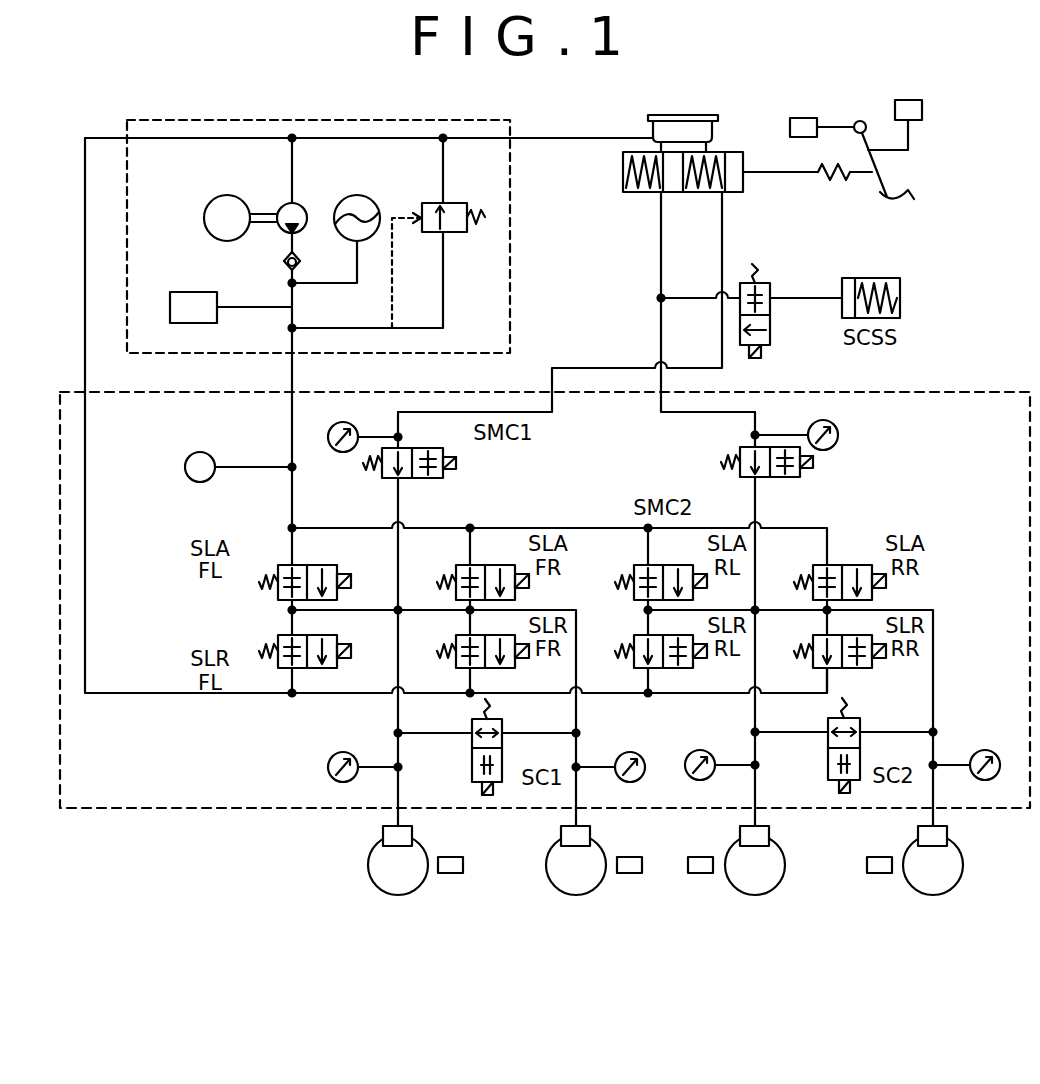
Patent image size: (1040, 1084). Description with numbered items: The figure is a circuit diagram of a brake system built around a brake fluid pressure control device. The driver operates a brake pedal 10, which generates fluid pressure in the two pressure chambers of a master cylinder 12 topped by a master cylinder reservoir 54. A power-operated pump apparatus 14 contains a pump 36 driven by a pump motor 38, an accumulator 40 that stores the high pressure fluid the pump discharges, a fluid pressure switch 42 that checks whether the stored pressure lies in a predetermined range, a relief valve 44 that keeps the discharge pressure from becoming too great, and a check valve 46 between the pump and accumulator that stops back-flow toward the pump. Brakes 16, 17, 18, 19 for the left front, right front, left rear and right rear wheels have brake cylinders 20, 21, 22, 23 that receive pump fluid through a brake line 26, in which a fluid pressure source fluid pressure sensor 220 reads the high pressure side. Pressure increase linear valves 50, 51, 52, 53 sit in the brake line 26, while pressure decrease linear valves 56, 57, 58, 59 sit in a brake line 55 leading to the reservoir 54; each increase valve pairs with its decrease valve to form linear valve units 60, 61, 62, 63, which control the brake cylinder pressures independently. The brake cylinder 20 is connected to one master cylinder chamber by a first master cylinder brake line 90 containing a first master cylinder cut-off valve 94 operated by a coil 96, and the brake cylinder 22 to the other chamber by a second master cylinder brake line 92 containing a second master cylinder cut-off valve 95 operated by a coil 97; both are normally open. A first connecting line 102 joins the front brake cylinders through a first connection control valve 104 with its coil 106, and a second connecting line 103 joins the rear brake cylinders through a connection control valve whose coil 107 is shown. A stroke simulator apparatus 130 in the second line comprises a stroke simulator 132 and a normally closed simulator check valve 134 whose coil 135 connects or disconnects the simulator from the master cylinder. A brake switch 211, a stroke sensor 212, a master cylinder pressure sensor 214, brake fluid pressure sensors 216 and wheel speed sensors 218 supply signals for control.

The brake pedal 10 is at (870, 182).
The master cylinder 12 is at (608, 186).
The pump apparatus 14 is at (349, 120).
The brake 16 is at (345, 861).
The brake 17 is at (541, 861).
The brake 18 is at (799, 858).
The brake 19 is at (977, 858).
The brake cylinder 20 is at (383, 833).
The brake cylinder 21 is at (561, 833).
The brake cylinder 22 is at (769, 833).
The brake cylinder 23 is at (947, 833).
The brake line 26 is at (294, 373).
The pump 36 is at (303, 228).
The pump motor 38 is at (205, 207).
The accumulator 40 is at (347, 196).
The fluid pressure switch 42 is at (178, 292).
The relief valve 44 is at (458, 232).
The check valve 46 is at (284, 262).
The pressure increase linear valve 50 is at (283, 566).
The pressure increase linear valve 51 is at (483, 565).
The pressure increase linear valve 52 is at (661, 565).
The pressure increase linear valve 53 is at (840, 565).
The master cylinder reservoir 54 is at (650, 132).
The brake line 55 is at (113, 693).
The pressure decrease linear valve 56 is at (283, 666).
The pressure decrease linear valve 57 is at (498, 669).
The pressure decrease linear valve 58 is at (678, 669).
The pressure decrease linear valve 59 is at (855, 669).
The linear valve unit 60 is at (279, 618).
The linear valve unit 61 is at (455, 618).
The linear valve unit 62 is at (633, 618).
The linear valve unit 63 is at (813, 618).
The first master cylinder brake line 90 is at (552, 413).
The second master cylinder brake line 92 is at (673, 413).
The first master cylinder cut-off valve 94 is at (417, 448).
The second master cylinder cut-off valve 95 is at (750, 479).
The coil 96 is at (458, 463).
The coil 97 is at (818, 462).
The first connecting line 102 is at (512, 731).
The second connecting line 103 is at (862, 731).
The first connection control valve 104 is at (502, 742).
The coil 106 is at (480, 788).
The coil 107 is at (832, 788).
The stroke simulator apparatus 130 is at (790, 268).
The stroke simulator 132 is at (890, 278).
The simulator check valve 134 is at (772, 305).
The coil 135 is at (760, 358).
The brake switch 211 is at (912, 100).
The stroke sensor 212 is at (795, 118).
The master cylinder pressure sensor 214 is at (340, 452).
The brake fluid pressure sensor 216 is at (330, 762).
The wheel speed sensor 218 is at (453, 857).
The fluid pressure source fluid pressure sensor 220 is at (185, 467).